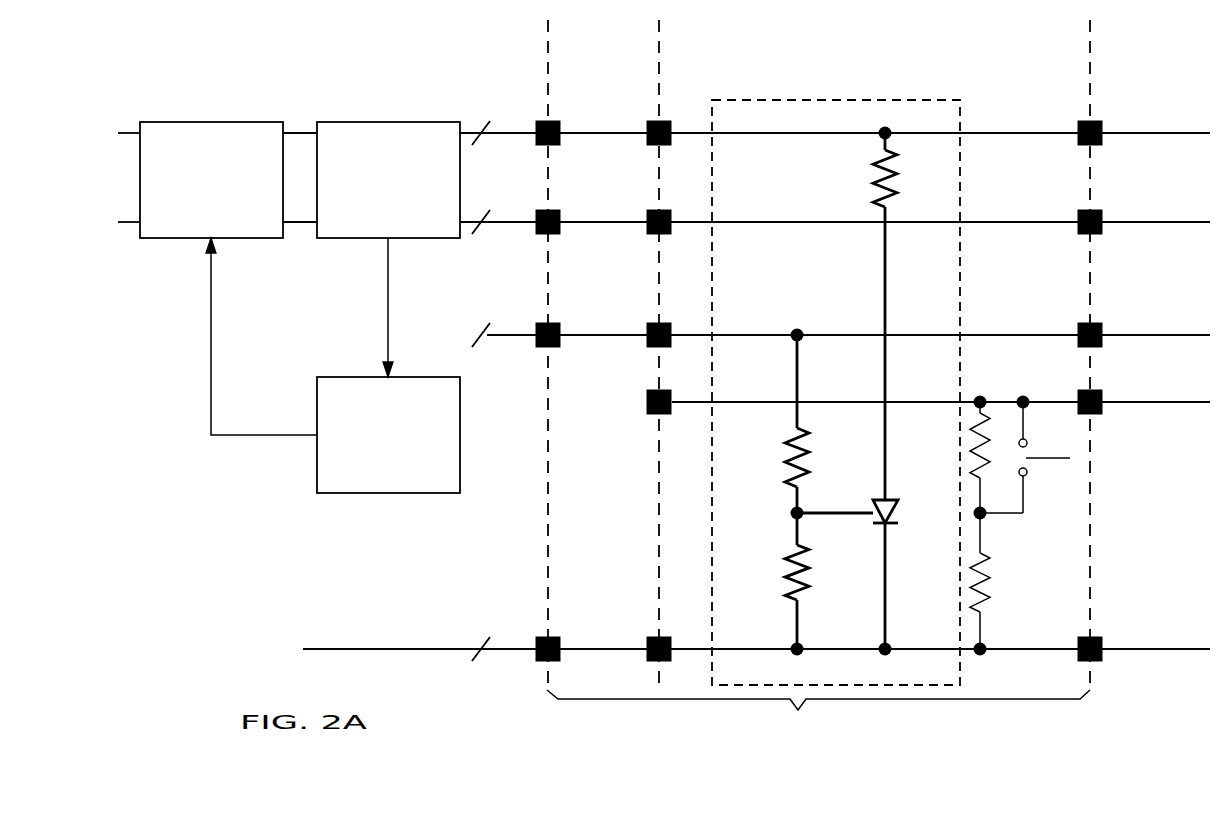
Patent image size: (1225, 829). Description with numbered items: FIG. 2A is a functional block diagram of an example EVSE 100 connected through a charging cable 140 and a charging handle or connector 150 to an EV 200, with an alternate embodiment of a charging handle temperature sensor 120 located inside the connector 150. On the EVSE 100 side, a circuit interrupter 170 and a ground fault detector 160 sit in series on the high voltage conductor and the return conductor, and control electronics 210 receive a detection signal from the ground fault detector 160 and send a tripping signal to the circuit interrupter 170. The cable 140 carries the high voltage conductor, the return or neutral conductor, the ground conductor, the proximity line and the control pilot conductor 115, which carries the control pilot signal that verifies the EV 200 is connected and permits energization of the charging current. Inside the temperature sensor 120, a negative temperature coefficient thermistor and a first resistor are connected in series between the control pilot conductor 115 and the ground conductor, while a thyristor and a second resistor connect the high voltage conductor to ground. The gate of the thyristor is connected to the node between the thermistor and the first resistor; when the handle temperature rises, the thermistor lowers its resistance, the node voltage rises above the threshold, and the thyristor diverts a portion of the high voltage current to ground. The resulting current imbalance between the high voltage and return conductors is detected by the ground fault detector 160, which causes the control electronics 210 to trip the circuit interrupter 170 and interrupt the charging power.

The EVSE 100 is at (377, 351).
The control pilot conductor 115 is at (605, 335).
The charging handle temperature sensor 120 is at (960, 175).
The charging cable 140 is at (604, 351).
The charging handle 150 is at (882, 355).
The ground fault detector 160 is at (388, 121).
The circuit interrupter 170 is at (160, 238).
The EV 200 is at (1089, 352).
The control electronics 210 is at (388, 493).